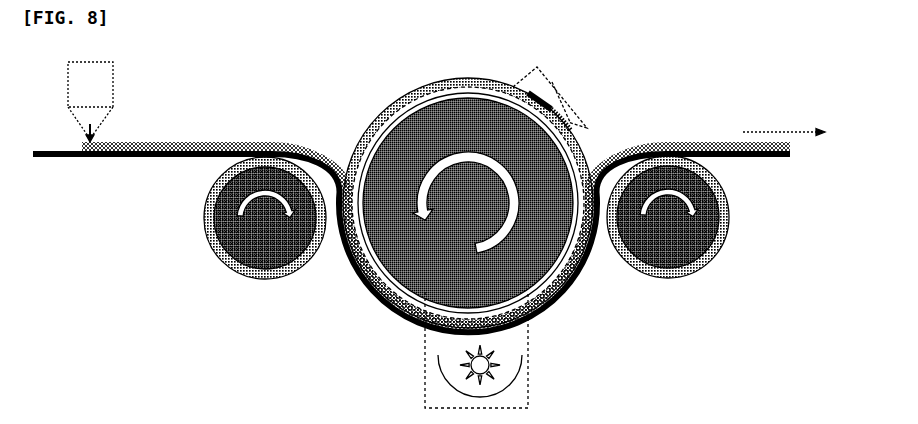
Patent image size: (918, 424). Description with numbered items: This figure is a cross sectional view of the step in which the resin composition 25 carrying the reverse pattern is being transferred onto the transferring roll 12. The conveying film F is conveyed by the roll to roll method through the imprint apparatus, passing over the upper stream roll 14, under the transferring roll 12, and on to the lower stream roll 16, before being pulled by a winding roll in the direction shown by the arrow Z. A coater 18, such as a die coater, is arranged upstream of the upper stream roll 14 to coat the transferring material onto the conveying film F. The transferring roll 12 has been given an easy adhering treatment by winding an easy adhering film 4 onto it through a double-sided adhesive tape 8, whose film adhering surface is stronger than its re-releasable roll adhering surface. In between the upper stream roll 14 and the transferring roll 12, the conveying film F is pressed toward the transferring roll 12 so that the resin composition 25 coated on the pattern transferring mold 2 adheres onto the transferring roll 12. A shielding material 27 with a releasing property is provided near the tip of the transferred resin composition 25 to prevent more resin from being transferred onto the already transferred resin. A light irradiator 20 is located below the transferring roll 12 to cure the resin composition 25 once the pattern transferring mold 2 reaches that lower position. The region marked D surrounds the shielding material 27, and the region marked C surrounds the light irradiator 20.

The pattern transferring mold 2 is at (660, 147).
The easy adhering film 4 is at (372, 122).
The double-sided adhesive tape 8 is at (417, 113).
The transferring roll 12 is at (388, 105).
The upper stream roll 14 is at (262, 257).
The lower stream roll 16 is at (688, 248).
The coater 18 is at (97, 68).
The light irradiator 20 is at (508, 343).
The resin composition 25 is at (578, 124).
The shielding material 27 is at (544, 96).
The conveying film F is at (70, 148).
The region D is at (548, 91).
The region C is at (466, 350).
The arrow Z is at (784, 123).